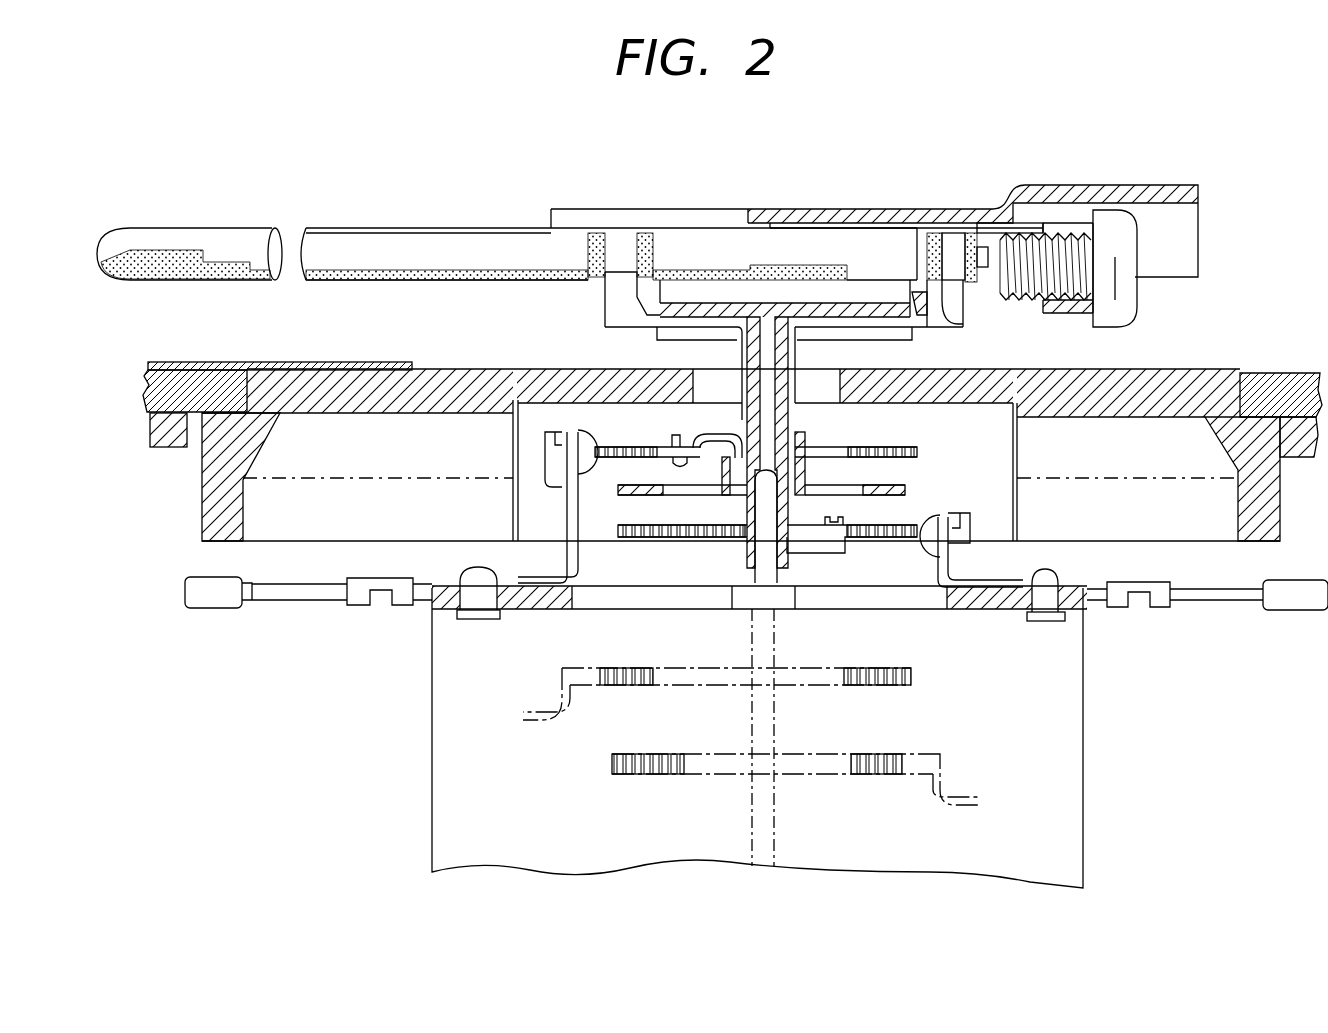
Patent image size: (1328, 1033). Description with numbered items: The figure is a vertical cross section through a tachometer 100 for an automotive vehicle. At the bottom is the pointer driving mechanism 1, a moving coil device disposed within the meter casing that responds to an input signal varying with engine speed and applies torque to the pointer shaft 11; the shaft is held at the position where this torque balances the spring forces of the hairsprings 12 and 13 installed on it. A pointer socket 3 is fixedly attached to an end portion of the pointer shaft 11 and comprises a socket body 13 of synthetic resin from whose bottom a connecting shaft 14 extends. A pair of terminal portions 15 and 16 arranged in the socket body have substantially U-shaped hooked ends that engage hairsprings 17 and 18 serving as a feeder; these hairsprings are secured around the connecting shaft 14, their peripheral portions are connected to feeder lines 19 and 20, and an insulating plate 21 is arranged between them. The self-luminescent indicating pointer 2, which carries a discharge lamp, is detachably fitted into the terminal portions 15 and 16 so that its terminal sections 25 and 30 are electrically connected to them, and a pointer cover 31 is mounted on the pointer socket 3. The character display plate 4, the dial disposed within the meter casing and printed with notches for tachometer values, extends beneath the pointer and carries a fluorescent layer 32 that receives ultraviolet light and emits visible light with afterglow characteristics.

The pointer driving mechanism 1 is at (1097, 712).
The self-luminescent indicating pointer 2 is at (441, 218).
The pointer socket 3 is at (898, 360).
The character display plate 4 is at (188, 392).
The pointer shaft 11 is at (783, 578).
The hairspring 12 is at (925, 680).
The socket body 13 is at (676, 302).
The connecting shaft 14 is at (780, 328).
The terminal portion 15 is at (615, 278).
The terminal portion 16 is at (952, 302).
The hairspring 17 is at (617, 445).
The hairspring 18 is at (640, 525).
The feeder line 19 is at (318, 600).
The feeder line 20 is at (1218, 602).
The insulating plate 21 is at (885, 482).
The terminal section 25 is at (978, 232).
The terminal section 30 is at (588, 250).
The pointer cover 31 is at (905, 208).
The fluorescent layer 32 is at (292, 362).
The tachometer 100 is at (1063, 178).